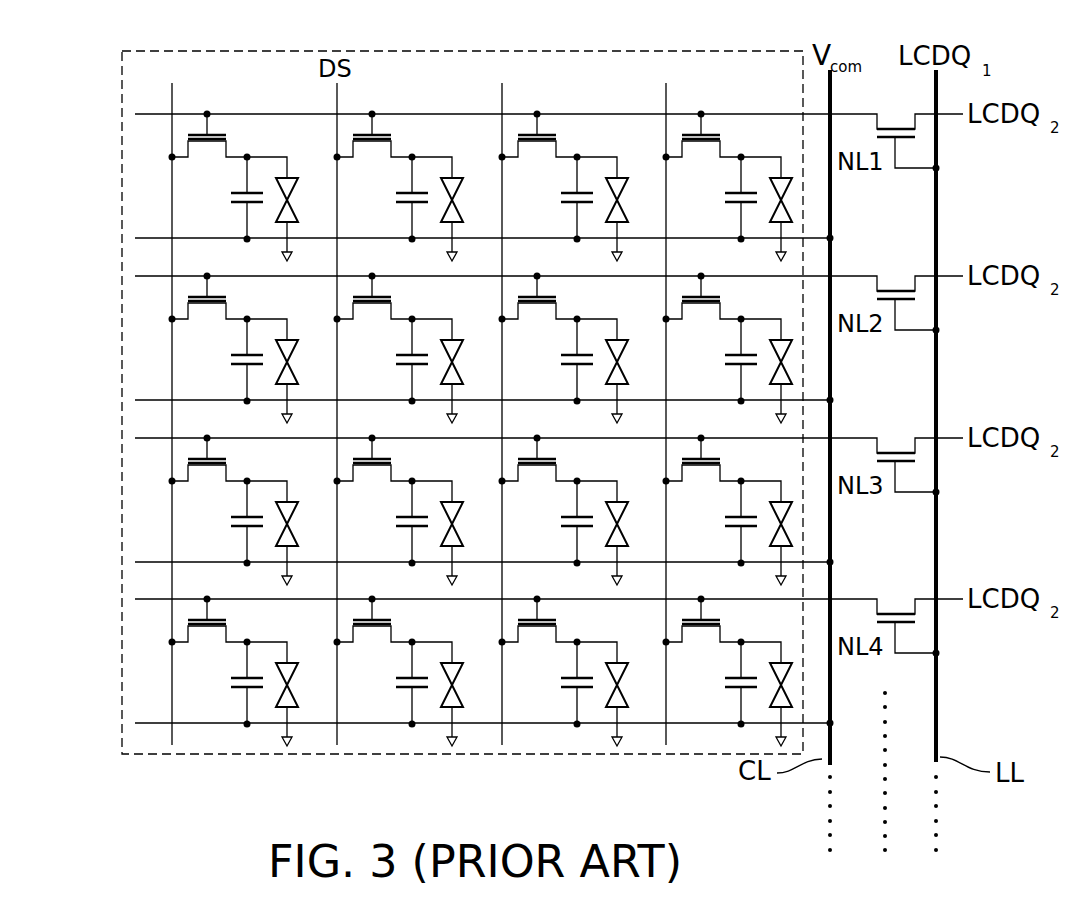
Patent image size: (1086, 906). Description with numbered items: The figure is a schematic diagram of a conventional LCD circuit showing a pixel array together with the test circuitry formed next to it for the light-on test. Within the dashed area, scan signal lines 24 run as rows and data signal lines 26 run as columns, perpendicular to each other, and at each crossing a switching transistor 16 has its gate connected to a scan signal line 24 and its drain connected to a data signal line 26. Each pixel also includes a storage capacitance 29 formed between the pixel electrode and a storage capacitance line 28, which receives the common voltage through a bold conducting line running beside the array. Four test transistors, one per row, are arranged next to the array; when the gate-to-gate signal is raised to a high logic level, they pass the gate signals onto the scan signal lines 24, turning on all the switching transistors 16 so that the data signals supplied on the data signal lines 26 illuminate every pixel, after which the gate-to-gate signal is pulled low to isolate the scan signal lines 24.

The TFT 16 is at (235, 136).
The scan signal line 24 is at (150, 118).
The data signal line 26 is at (336, 130).
The storage capacitance line 28 is at (477, 238).
The storage capacitance 29 is at (161, 203).